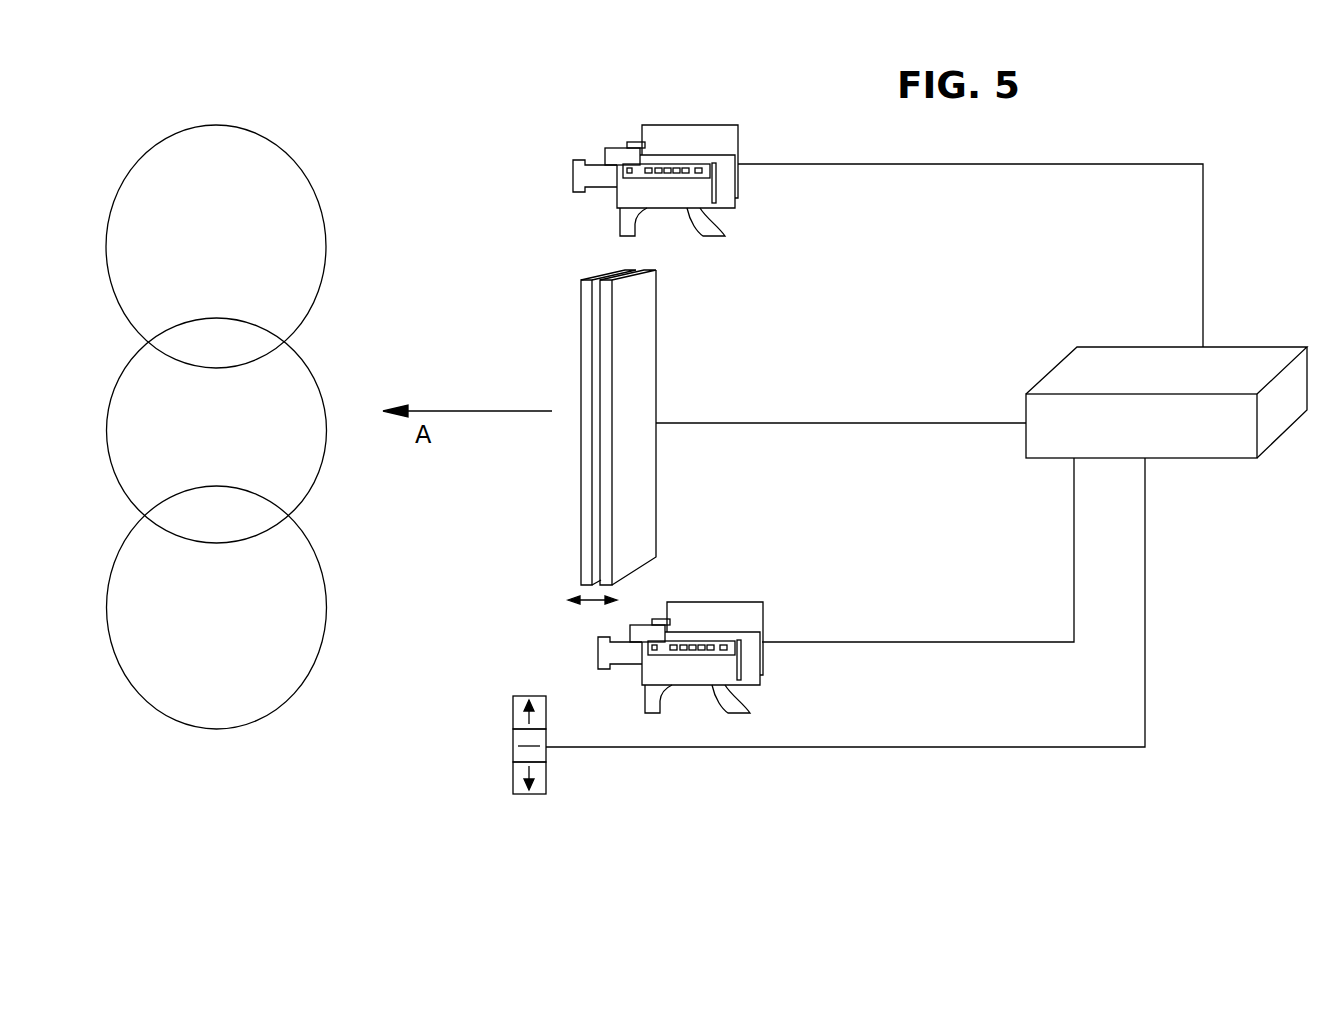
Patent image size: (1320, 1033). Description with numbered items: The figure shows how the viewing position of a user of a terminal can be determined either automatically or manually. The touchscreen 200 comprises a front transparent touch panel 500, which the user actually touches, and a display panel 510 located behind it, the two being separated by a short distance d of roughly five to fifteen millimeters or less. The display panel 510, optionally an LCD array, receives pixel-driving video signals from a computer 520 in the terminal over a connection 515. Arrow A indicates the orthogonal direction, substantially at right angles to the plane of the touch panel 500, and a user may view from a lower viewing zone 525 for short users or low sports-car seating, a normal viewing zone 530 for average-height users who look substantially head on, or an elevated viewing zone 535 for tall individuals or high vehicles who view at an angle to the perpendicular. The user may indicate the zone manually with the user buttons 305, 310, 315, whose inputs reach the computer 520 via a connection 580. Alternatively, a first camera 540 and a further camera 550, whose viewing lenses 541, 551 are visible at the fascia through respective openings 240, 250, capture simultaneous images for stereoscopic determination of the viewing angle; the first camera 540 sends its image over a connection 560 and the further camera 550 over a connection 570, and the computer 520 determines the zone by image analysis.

The touchscreen 200 is at (587, 448).
The opening 240 is at (627, 180).
The opening 250 is at (622, 635).
The user button 305 is at (513, 710).
The user button 310 is at (512, 740).
The user button 315 is at (512, 775).
The touch panel 500 is at (617, 427).
The display panel 510 is at (640, 340).
The connection 515 is at (829, 423).
The computer 520 is at (1047, 447).
The lower viewing zone 525 is at (233, 670).
The normal viewing zone 530 is at (172, 440).
The elevated viewing zone 535 is at (233, 187).
The first camera 540 is at (720, 608).
The viewing lens 541 is at (590, 638).
The further camera 550 is at (722, 188).
The viewing lens 551 is at (573, 190).
The connection 560 is at (917, 643).
The connection 570 is at (1004, 165).
The connection 580 is at (1028, 751).